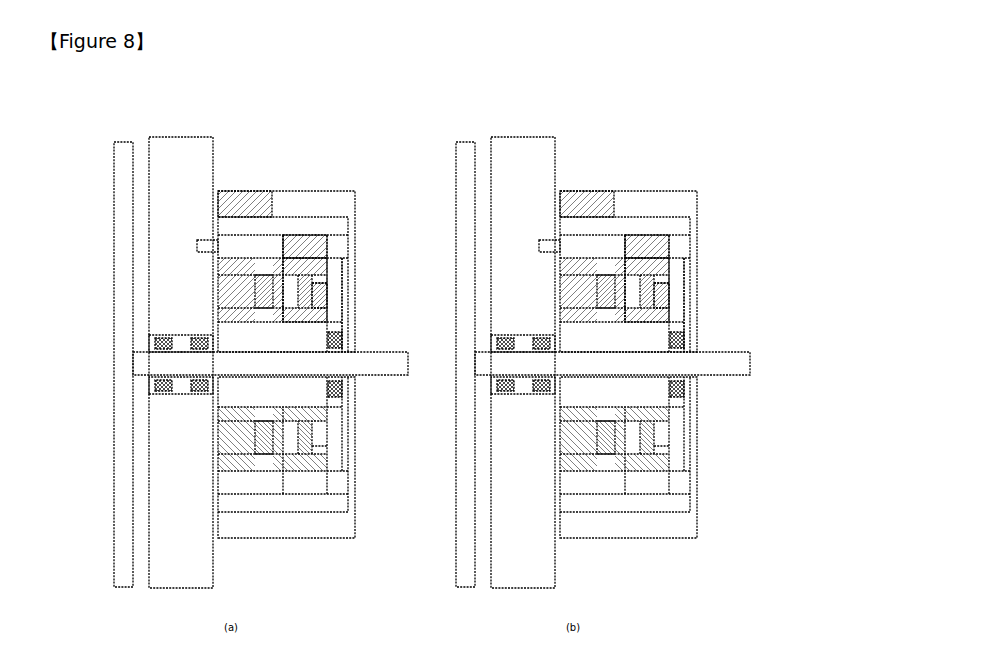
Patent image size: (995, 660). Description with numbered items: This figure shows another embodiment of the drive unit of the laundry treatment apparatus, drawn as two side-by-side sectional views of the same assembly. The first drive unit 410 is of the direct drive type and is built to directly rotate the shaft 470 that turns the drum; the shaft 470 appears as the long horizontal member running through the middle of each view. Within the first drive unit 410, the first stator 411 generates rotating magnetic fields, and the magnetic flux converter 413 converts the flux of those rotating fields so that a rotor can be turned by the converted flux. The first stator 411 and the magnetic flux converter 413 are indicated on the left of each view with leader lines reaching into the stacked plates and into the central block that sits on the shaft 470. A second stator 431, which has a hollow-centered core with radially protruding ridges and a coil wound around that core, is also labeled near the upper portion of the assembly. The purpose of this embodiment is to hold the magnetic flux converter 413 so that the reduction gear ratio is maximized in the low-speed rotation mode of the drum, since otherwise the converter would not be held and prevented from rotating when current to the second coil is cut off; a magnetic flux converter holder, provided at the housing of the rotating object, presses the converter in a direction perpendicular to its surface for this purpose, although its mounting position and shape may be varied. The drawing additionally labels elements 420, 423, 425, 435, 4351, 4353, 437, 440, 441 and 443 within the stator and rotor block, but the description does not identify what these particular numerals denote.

The first drive unit 410 is at (78, 263).
The first stator 411 is at (218, 261).
The magnetic flux converter 413 is at (218, 289).
The stator assembly 420 is at (398, 236).
The stator core 423 is at (348, 244).
The stator yoke 425 is at (343, 261).
The second stator 431 is at (206, 238).
The bearing unit 435 is at (232, 153).
The bearing inner ring 4351 is at (233, 201).
The bearing outer ring 4353 is at (260, 201).
The partition wall 437 is at (277, 250).
The rotor assembly 440 is at (398, 280).
The rotor core 441 is at (330, 280).
The rotor coil 443 is at (328, 306).
The shaft 470 is at (381, 376).